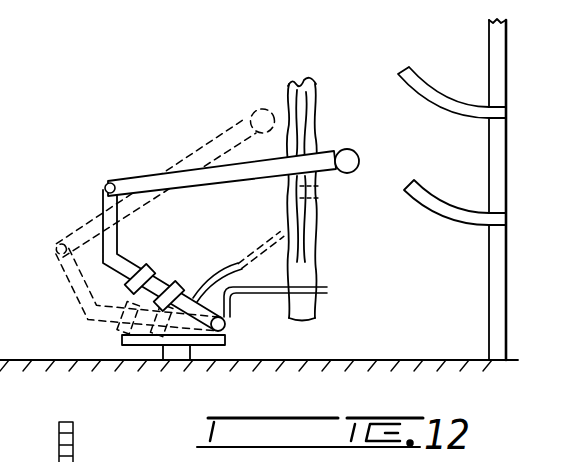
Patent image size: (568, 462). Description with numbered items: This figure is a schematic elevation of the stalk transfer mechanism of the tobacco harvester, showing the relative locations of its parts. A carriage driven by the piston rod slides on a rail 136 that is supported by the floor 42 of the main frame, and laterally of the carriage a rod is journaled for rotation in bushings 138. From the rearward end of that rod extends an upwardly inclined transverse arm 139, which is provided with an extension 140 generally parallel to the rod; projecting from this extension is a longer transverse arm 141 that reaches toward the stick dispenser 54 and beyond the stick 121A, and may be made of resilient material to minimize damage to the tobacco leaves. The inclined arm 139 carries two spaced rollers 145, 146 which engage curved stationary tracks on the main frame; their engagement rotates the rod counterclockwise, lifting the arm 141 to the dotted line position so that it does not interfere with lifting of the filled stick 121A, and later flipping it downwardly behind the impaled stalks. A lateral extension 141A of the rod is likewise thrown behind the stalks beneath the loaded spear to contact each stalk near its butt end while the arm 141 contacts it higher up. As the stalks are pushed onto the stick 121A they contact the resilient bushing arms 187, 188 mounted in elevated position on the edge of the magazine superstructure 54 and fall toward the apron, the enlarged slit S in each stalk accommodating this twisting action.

The floor 42 is at (262, 362).
The stick dispenser 54 is at (510, 168).
The resilient bushing arm 188 is at (467, 112).
The resilient bushing arm 187 is at (460, 217).
The slit S is at (317, 112).
The stick 121A is at (315, 193).
The rail 136 is at (118, 338).
The extension 140 is at (111, 183).
The transverse arm 141 is at (243, 180).
The roller 146 is at (147, 268).
The roller 145 is at (190, 293).
The transverse arm 139 is at (224, 277).
The lateral extension 141A is at (328, 290).
The bushings 138 is at (228, 327).